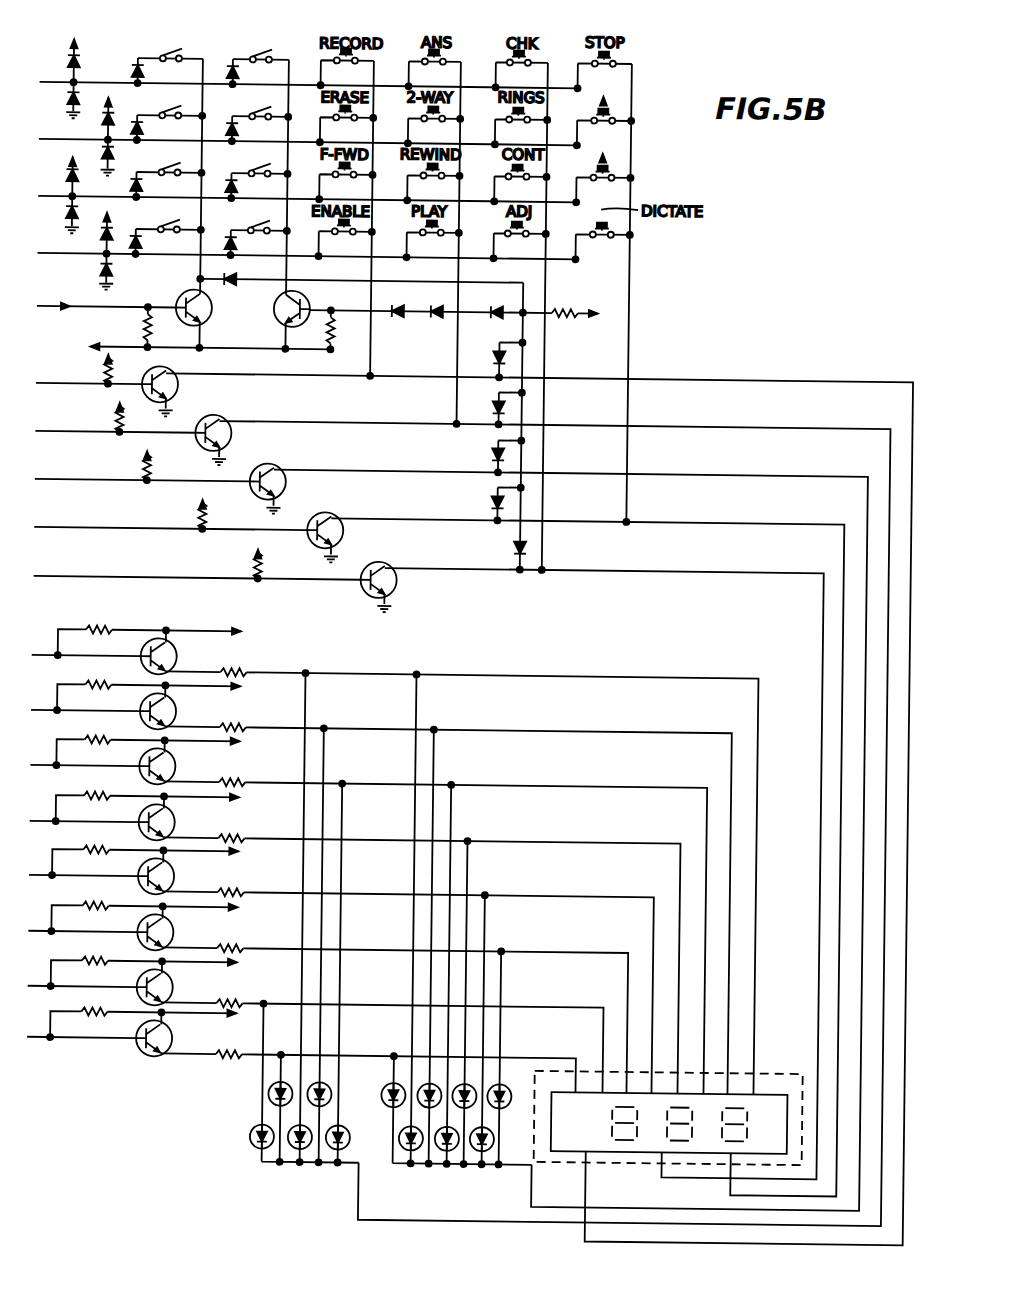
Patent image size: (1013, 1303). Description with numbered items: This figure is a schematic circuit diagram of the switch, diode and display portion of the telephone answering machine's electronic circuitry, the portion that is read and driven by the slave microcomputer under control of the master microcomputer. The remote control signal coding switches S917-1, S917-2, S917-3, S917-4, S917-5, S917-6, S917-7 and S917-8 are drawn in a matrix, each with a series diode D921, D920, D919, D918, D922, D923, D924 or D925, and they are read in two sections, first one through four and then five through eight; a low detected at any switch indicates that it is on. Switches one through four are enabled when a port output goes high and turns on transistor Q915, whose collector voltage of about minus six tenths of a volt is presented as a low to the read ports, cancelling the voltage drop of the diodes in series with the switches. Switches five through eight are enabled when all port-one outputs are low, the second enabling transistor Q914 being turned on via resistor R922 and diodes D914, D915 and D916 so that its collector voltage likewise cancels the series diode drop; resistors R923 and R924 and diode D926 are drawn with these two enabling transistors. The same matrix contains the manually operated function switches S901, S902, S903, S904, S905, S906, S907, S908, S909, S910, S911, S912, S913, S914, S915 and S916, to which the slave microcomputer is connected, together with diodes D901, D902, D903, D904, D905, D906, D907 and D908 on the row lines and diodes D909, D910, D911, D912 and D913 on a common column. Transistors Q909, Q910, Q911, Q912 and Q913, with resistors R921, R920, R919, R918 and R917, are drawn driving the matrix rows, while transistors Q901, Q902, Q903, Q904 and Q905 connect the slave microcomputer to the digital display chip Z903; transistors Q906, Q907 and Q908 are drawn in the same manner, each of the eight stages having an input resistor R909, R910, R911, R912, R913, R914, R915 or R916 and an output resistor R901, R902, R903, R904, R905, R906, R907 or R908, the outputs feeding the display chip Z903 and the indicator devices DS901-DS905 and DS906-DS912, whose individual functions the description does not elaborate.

The diode D901 is at (128, 272).
The diode D902 is at (55, 100).
The diode D903 is at (100, 158).
The diode D904 is at (54, 215).
The diode D905 is at (54, 178).
The diode D906 is at (103, 119).
The diode D907 is at (97, 59).
The diode D908 is at (127, 229).
The diode D909 is at (495, 352).
The diode D910 is at (492, 403).
The diode D911 is at (480, 456).
The diode D912 is at (485, 504).
The diode D913 is at (497, 557).
The diode D914 is at (491, 302).
The diode D915 is at (439, 301).
The diode D916 is at (399, 323).
The diode D918 is at (159, 243).
The diode D919 is at (159, 186).
The diode D920 is at (160, 129).
The diode D921 is at (161, 72).
The diode D922 is at (256, 73).
The diode D923 is at (255, 130).
The diode D924 is at (254, 187).
The diode D925 is at (253, 244).
The diode D926 is at (361, 288).
The remote control signal coding switch S917-1 is at (171, 218).
The remote control signal coding switch S917-2 is at (170, 161).
The remote control signal coding switch S917-3 is at (171, 104).
The remote control signal coding switch S917-4 is at (171, 47).
The remote control signal coding switch S917-5 is at (261, 219).
The remote control signal coding switch S917-6 is at (261, 162).
The remote control signal coding switch S917-7 is at (262, 105).
The remote control signal coding switch S917-8 is at (263, 48).
The pushbutton switch S901 is at (604, 128).
The pushbutton switch (dictate) S902 is at (603, 185).
The stop pushbutton switch S903 is at (603, 71).
The play pushbutton switch S904 is at (433, 183).
The pushbutton switch S905 is at (432, 240).
The rewind pushbutton switch S906 is at (434, 126).
The answer pushbutton switch S907 is at (433, 69).
The pushbutton switch S908 is at (602, 242).
The pushbutton switch S909 is at (519, 241).
The adjust pushbutton switch S910 is at (520, 184).
The continue pushbutton switch S911 is at (521, 127).
The check pushbutton switch S912 is at (520, 70).
The record pushbutton switch S913 is at (346, 68).
The erase pushbutton switch S914 is at (346, 125).
The fast-forward pushbutton switch S915 is at (345, 182).
The enable pushbutton switch S916 is at (344, 239).
The transistor Q901 is at (127, 650).
The transistor Q902 is at (127, 705).
The transistor Q903 is at (126, 760).
The transistor Q904 is at (125, 816).
The transistor Q905 is at (125, 870).
The transistor Q906 is at (124, 926).
The transistor Q907 is at (124, 981).
The transistor Q908 is at (123, 1032).
The transistor Q909 is at (130, 391).
The transistor Q910 is at (159, 439).
The transistor Q911 is at (183, 488).
The transistor Q912 is at (211, 536).
The transistor Q913 is at (238, 585).
The transistor Q914 is at (314, 316).
The transistor Q915 is at (145, 314).
The resistor R901 is at (460, 871).
The resistor R902 is at (447, 899).
The resistor R903 is at (434, 926).
The resistor R904 is at (421, 954).
The resistor R905 is at (408, 981).
The resistor R906 is at (395, 1009).
The resistor R907 is at (382, 1036).
The resistor R908 is at (368, 1070).
The resistor R909 is at (150, 630).
The resistor R910 is at (149, 685).
The resistor R911 is at (148, 740).
The resistor R912 is at (148, 796).
The resistor R913 is at (145, 861).
The resistor R914 is at (144, 917).
The resistor R915 is at (144, 972).
The resistor R916 is at (143, 1023).
The resistor R917 is at (232, 565).
The resistor R918 is at (176, 515).
The resistor R919 is at (116, 466).
The resistor R920 is at (92, 418).
The resistor R921 is at (80, 370).
The resistor R922 is at (573, 302).
The resistor R923 is at (347, 339).
The resistor R924 is at (122, 327).
The light emitting diodes DS901-DS905 is at (292, 1137).
The light emitting diodes DS906-DS912 is at (445, 1138).
The digital display chip Z903 is at (668, 1118).